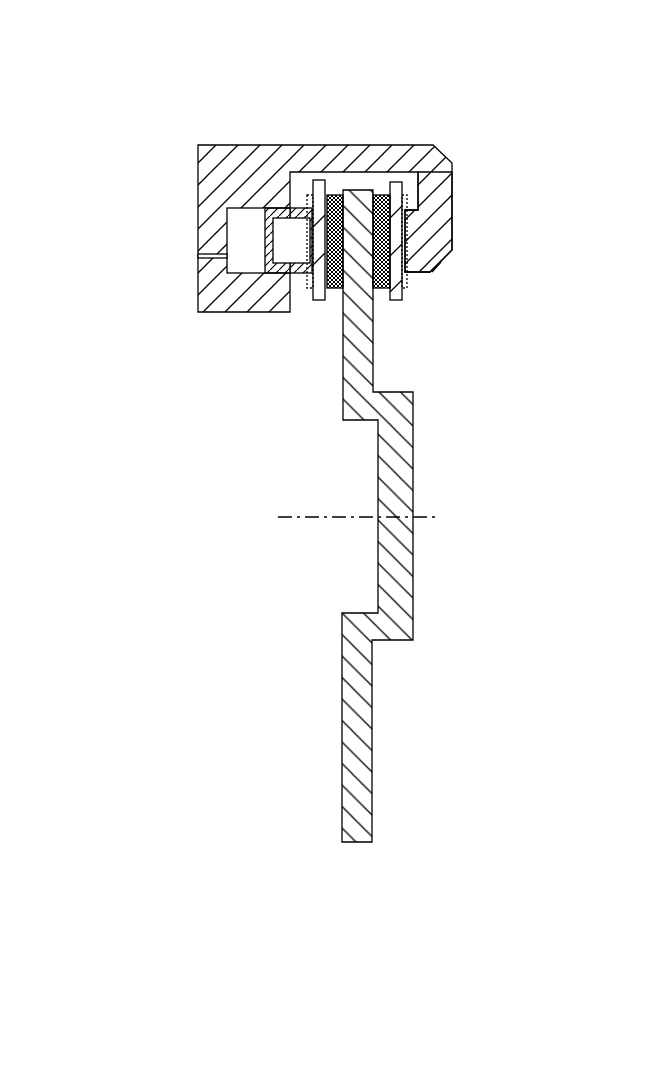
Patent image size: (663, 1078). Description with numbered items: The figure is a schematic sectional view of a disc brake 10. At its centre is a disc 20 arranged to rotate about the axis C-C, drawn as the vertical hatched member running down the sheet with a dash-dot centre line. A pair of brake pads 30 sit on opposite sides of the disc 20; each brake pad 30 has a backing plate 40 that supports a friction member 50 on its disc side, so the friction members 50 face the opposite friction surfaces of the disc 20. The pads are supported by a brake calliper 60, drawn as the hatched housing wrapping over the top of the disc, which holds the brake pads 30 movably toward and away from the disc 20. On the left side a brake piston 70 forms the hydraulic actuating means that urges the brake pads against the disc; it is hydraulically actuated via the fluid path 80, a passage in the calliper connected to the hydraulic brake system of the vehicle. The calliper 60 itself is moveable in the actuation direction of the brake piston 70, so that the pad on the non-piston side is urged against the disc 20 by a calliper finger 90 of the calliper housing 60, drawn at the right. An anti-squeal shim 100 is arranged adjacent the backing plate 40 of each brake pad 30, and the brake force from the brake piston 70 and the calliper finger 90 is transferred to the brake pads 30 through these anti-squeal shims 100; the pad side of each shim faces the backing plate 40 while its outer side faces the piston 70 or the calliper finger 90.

The disc brake 10 is at (106, 73).
The disc 20 is at (365, 710).
The brake pads 30 is at (309, 322).
The backing plate 40 is at (322, 197).
The friction member 50 is at (341, 190).
The brake calliper 60 is at (387, 157).
The brake piston 70 is at (280, 210).
The fluid path 80 is at (195, 258).
The calliper finger 90 is at (435, 253).
The anti-squeal shim 100 is at (310, 205).